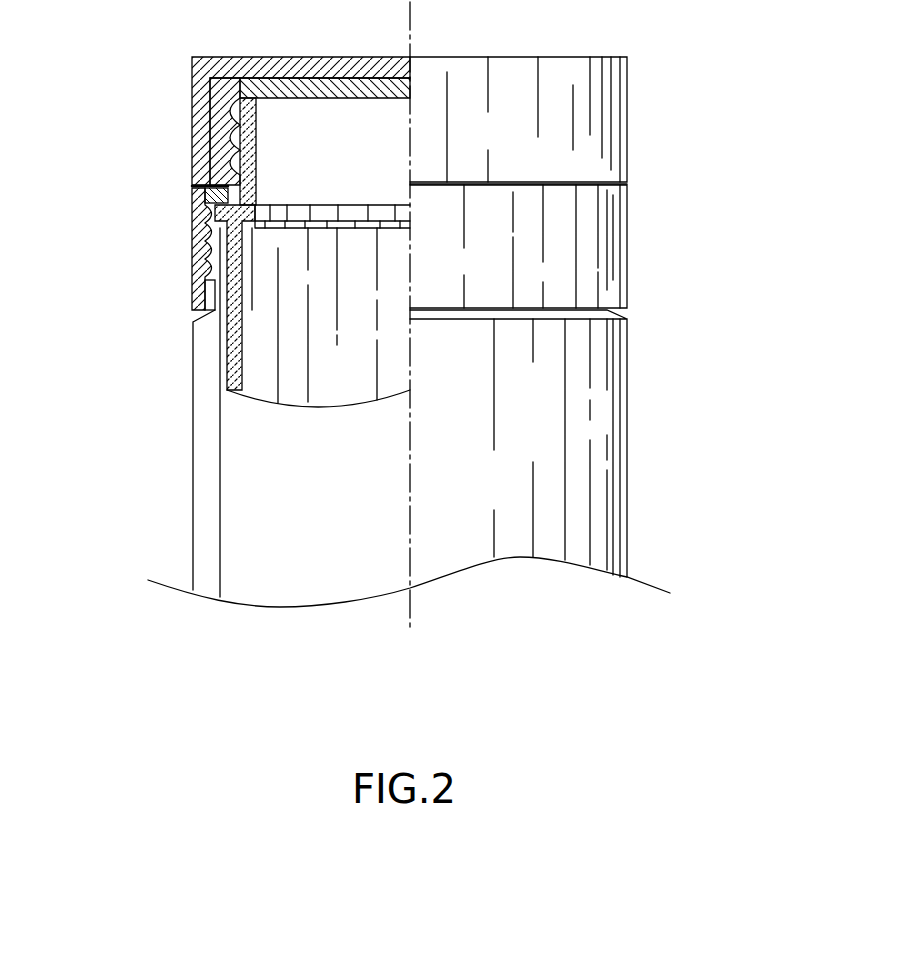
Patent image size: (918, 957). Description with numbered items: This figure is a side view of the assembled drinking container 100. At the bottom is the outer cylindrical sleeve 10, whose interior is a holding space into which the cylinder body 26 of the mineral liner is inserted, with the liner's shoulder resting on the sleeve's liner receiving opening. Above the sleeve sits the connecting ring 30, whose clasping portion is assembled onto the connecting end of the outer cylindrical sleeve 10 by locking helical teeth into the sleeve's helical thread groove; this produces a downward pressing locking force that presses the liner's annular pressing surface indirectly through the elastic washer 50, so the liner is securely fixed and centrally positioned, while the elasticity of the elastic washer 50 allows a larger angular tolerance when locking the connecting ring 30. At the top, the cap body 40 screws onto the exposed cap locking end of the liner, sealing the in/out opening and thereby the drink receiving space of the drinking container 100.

The outer cylindrical sleeve 10 is at (667, 443).
The cylinder body 26 is at (227, 333).
The connecting ring 30 is at (173, 243).
The cap body 40 is at (168, 100).
The elastic washer 50 is at (205, 185).
The drinking container 100 is at (698, 155).